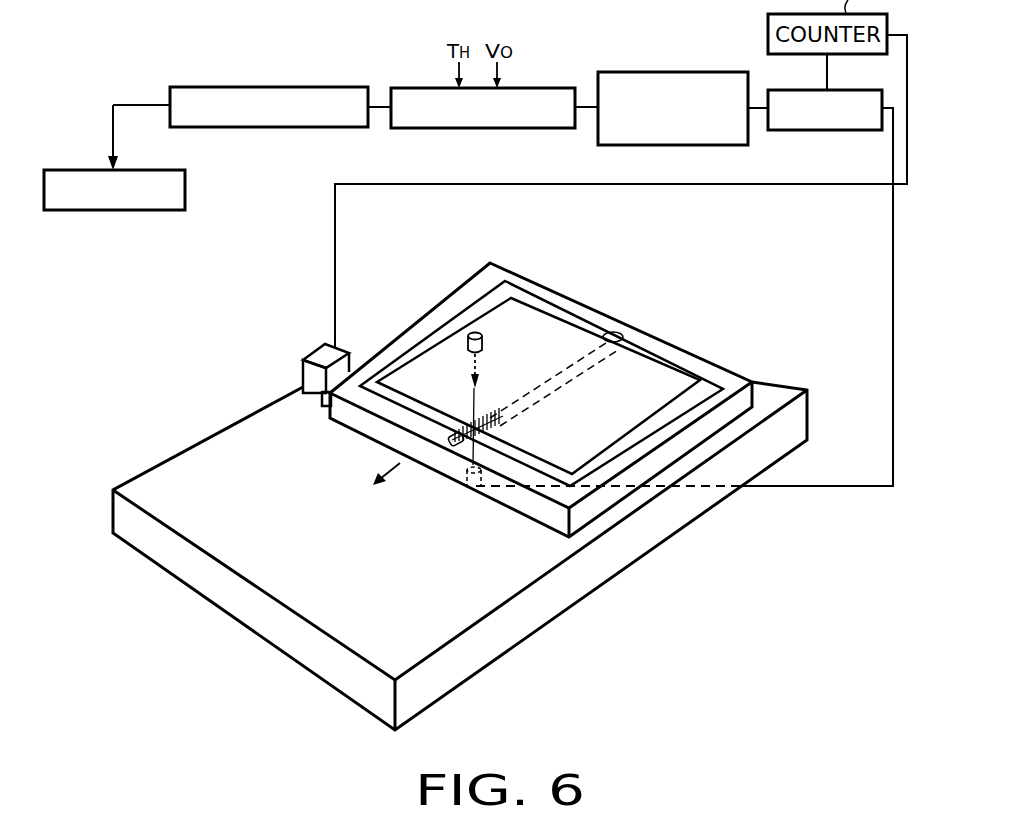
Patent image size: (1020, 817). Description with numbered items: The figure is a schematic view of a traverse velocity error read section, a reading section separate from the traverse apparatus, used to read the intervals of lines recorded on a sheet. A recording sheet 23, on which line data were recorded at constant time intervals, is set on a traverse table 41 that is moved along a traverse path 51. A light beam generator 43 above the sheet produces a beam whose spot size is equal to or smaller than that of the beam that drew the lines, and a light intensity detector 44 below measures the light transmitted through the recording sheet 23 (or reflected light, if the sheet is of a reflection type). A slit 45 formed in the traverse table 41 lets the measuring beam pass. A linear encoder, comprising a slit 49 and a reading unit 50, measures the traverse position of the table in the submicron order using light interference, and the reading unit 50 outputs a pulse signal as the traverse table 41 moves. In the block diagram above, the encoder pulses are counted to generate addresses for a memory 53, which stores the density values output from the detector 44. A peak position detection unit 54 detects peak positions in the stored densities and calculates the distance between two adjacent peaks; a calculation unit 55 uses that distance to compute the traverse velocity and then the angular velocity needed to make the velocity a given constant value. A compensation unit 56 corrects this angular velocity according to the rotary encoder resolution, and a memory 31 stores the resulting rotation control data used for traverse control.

The recording sheet 23 is at (560, 337).
The memory 31 is at (82, 168).
The traverse table 41 is at (447, 327).
The light beam generator 43 is at (482, 333).
The light intensity detector 44 is at (470, 490).
The slit 45 is at (450, 442).
The slit 49 is at (400, 345).
The reading unit 50 is at (318, 352).
The traverse path 51 is at (200, 445).
The memory 53 is at (845, 131).
The peak position detection unit 54 is at (684, 72).
The calculation unit 55 is at (553, 87).
The compensation unit 56 is at (308, 86).